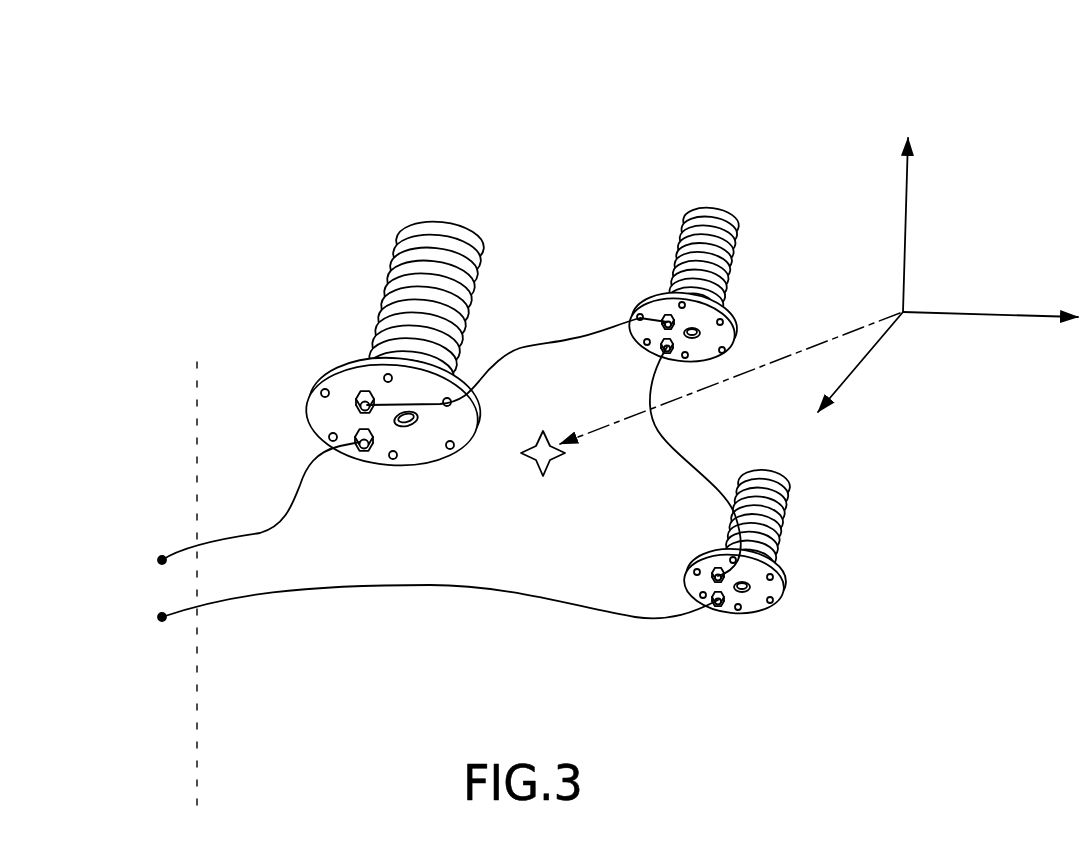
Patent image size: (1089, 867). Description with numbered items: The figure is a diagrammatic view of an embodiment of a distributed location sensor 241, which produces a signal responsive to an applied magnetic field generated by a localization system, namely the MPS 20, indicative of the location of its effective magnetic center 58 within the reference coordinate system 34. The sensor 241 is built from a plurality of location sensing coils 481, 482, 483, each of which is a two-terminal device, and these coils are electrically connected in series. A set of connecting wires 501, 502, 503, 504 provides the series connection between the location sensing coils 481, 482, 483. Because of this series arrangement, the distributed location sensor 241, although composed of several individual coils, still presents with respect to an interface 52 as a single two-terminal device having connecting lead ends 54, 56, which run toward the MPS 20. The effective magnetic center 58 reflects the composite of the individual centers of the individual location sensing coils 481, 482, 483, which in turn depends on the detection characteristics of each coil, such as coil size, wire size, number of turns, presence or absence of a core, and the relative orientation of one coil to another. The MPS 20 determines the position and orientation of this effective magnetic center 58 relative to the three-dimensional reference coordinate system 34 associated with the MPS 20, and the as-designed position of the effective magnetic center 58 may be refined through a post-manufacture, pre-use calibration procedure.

The distributed location sensor 241 is at (508, 148).
The location sensing coil 481 is at (800, 543).
The location sensing coil 482 is at (672, 208).
The location sensing coil 483 is at (374, 266).
The connecting wire 501 is at (440, 592).
The connecting wire 502 is at (672, 450).
The connecting wire 503 is at (530, 347).
The connecting wire 504 is at (283, 525).
The interface 52 is at (196, 385).
The connecting lead end 54 is at (162, 557).
The connecting lead end 56 is at (162, 620).
The effective magnetic center 58 is at (551, 460).
The reference coordinate system 34 is at (940, 270).
The MPS 20 is at (90, 588).